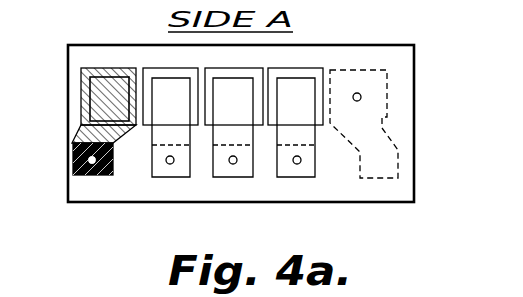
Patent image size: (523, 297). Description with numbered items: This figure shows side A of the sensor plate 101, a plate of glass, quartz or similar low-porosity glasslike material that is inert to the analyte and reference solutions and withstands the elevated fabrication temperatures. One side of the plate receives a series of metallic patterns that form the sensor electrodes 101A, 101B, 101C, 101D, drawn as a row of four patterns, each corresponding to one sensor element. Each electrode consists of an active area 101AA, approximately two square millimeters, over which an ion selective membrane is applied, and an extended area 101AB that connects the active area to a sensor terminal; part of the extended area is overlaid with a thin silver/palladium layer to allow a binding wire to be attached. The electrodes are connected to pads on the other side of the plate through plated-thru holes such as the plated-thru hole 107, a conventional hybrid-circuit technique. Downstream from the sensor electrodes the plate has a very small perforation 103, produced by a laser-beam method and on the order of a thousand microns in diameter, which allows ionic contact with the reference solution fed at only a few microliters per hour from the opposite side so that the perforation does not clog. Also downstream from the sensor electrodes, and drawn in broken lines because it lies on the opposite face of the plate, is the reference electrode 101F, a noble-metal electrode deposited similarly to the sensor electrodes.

The sensor plate 101 is at (370, 45).
The sensor electrode 101A is at (80, 175).
The active area 101AA is at (116, 68).
The extended area 101AB is at (80, 131).
The sensor electrode 101B is at (180, 178).
The sensor electrode 101C is at (245, 178).
The sensor electrode 101D is at (317, 170).
The reference electrode 101F is at (388, 118).
The perforation 103 is at (361, 96).
The plated-thru hole 107 is at (98, 175).